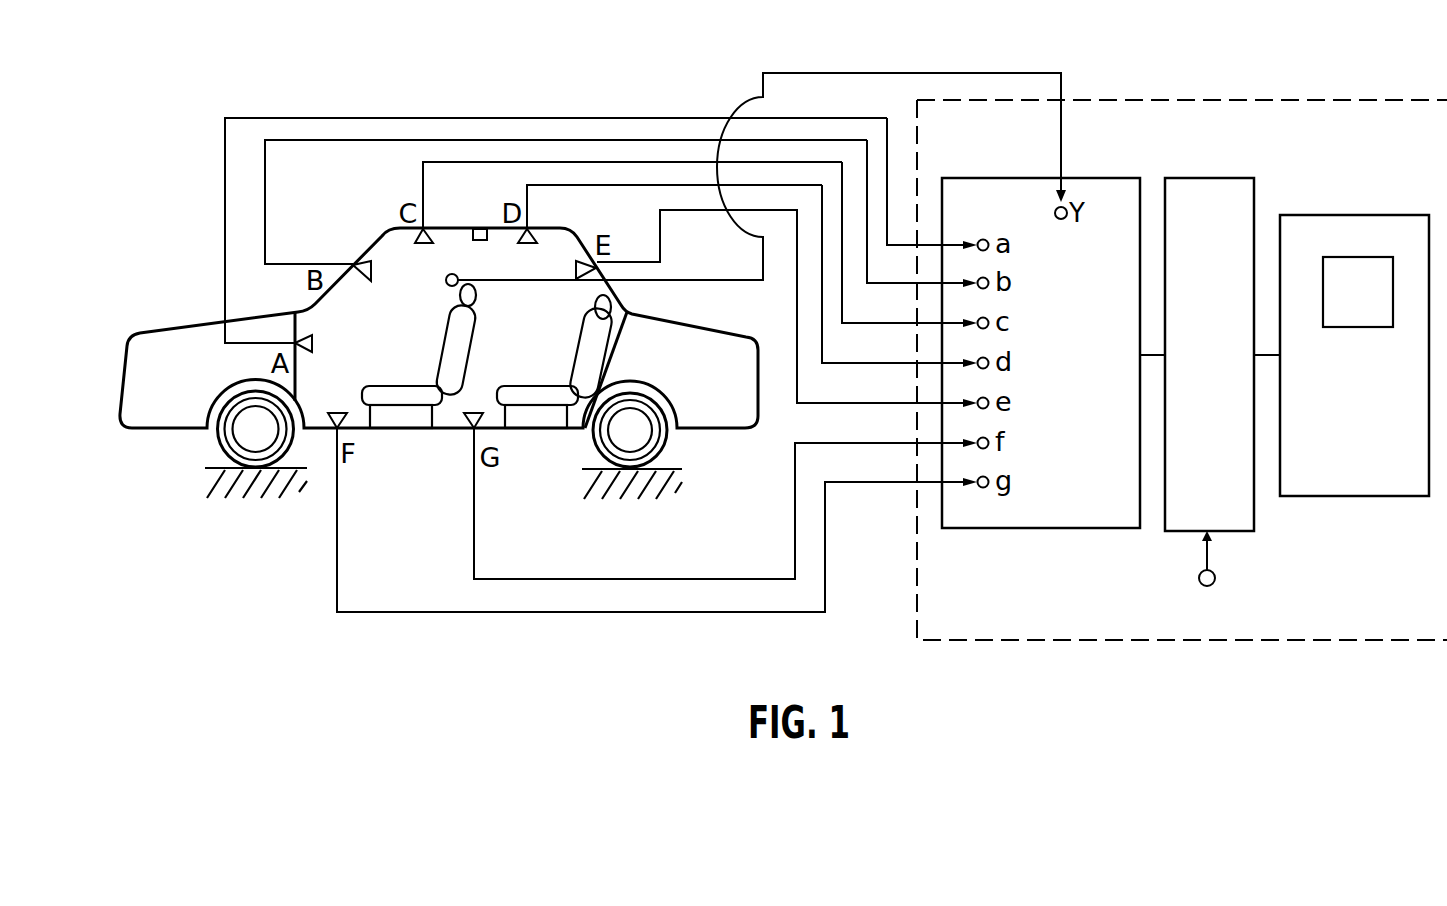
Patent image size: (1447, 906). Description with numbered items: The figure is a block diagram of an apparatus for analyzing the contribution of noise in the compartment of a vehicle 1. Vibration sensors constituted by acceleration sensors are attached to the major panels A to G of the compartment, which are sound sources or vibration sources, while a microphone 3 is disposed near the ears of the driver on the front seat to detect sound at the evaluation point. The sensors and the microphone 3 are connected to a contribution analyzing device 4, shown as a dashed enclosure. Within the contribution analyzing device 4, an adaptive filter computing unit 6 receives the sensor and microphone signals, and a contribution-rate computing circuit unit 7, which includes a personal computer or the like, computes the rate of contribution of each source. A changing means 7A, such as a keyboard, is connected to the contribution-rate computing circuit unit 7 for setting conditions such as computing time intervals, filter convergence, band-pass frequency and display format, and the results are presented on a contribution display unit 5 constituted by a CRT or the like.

The vehicle 1 is at (172, 416).
The microphone 3 is at (448, 286).
The contribution analyzing device 4 is at (1243, 100).
The contribution display unit 5 is at (1361, 215).
The adaptive filter computing unit 6 is at (1118, 178).
The contribution-rate computing circuit unit 7 is at (1216, 178).
The changing means 7A is at (1215, 577).